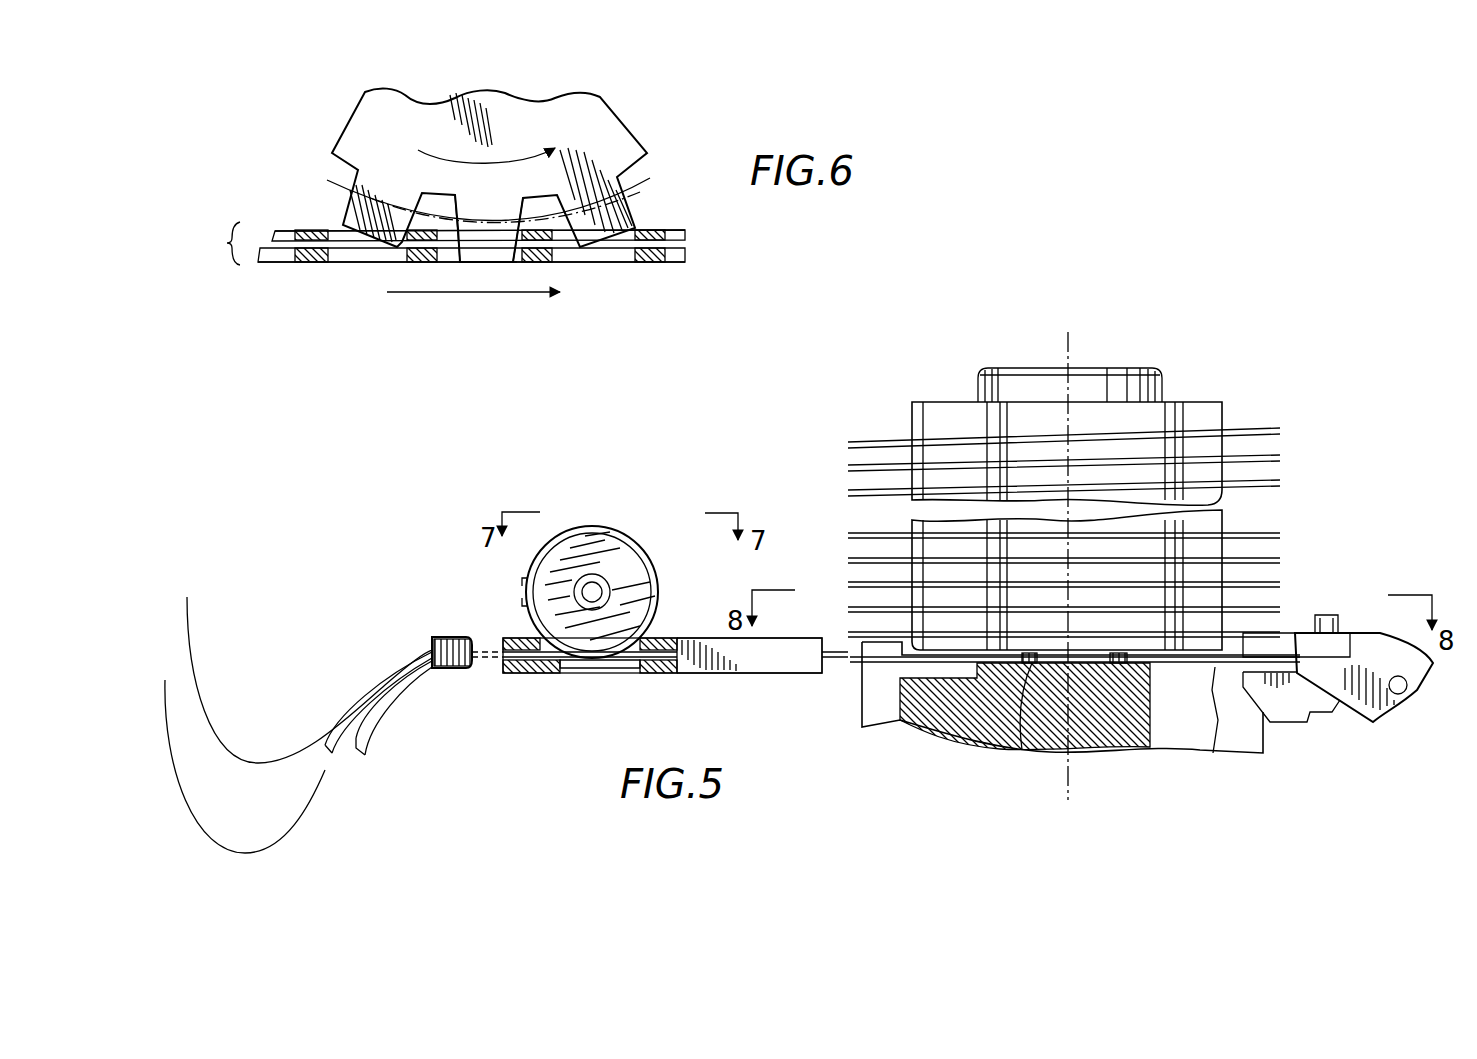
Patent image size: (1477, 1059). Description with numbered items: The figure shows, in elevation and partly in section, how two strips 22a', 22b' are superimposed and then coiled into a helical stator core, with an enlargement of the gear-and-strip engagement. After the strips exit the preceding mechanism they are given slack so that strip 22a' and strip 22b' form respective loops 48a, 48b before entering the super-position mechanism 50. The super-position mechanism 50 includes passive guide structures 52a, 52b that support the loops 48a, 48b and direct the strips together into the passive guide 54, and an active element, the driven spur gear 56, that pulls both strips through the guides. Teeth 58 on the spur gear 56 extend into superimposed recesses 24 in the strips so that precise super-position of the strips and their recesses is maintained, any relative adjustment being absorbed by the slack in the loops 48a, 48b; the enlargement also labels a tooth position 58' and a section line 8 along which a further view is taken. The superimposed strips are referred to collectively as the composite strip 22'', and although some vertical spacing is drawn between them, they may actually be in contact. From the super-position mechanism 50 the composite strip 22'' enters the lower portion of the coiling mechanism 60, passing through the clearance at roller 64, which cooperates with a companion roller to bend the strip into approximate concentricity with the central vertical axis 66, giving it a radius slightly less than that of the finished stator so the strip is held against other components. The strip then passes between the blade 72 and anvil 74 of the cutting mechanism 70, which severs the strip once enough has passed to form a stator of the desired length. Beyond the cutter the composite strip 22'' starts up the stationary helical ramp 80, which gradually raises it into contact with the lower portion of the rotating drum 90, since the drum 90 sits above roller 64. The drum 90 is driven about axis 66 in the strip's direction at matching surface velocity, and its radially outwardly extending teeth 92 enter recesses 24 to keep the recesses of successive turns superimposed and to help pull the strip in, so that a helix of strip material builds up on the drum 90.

In FIG. 6, the composite strip 22'' is at (442, 243).
In FIG. 5, the composite strip 22'' is at (881, 557).
In FIG. 6, the strip 22a' is at (468, 192).
In FIG. 5, the strip 22a' is at (309, 680).
In FIG. 6, the strip 22b' is at (471, 292).
In FIG. 5, the strip 22b' is at (245, 766).
In FIG. 6, the recesses 24 is at (588, 265).
In FIG. 5, the loop 48a is at (254, 752).
In FIG. 5, the loop 48b is at (270, 860).
In FIG. 5, the super-position mechanism 50 is at (482, 630).
In FIG. 5, the passive guide structure 52a is at (322, 762).
In FIG. 5, the passive guide structure 52b is at (362, 742).
In FIG. 5, the passive guide 54 is at (452, 637).
In FIG. 6, the driven spur gear 56 is at (622, 133).
In FIG. 5, the driven spur gear 56 is at (624, 557).
In FIG. 6, the teeth 58 is at (497, 241).
In FIG. 6, the tooth gap 58' is at (488, 268).
In FIG. 5, the coiling mechanism 60 is at (1138, 352).
In FIG. 5, the roller 64 is at (1016, 750).
In FIG. 5, the central vertical axis 66 is at (1067, 368).
In FIG. 5, the cutting mechanism 70 is at (1371, 726).
In FIG. 5, the blade 72 is at (1300, 705).
In FIG. 5, the anvil 74 is at (1285, 640).
In FIG. 5, the stationary helical ramp 80 is at (847, 647).
In FIG. 5, the rotating drum 90 is at (1212, 404).
In FIG. 5, the teeth 92 is at (917, 422).
In FIG. 5, the guide bar 8 is at (662, 655).